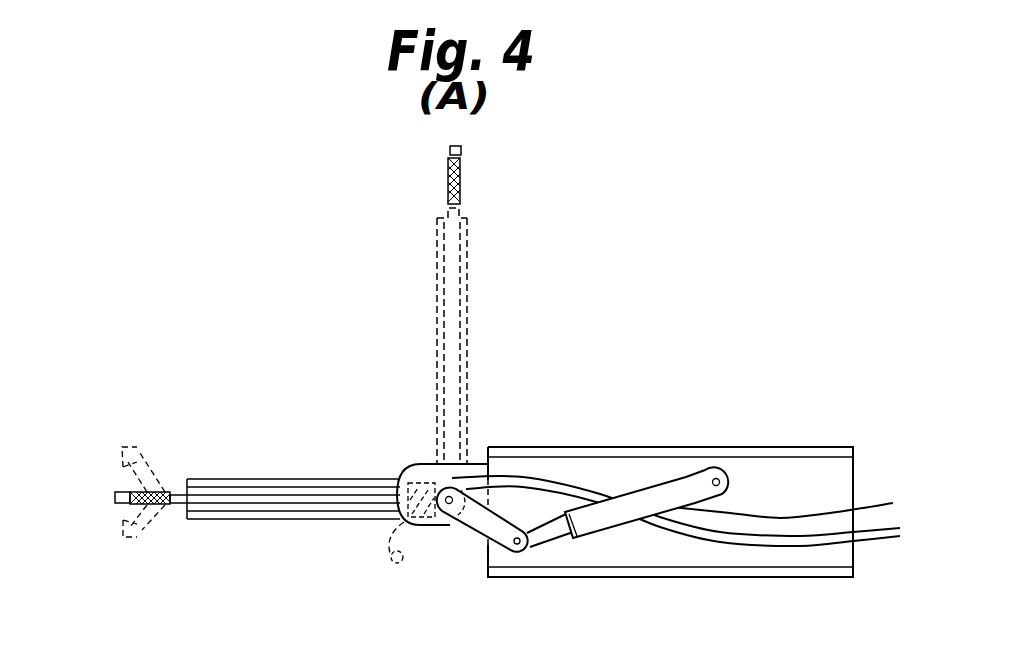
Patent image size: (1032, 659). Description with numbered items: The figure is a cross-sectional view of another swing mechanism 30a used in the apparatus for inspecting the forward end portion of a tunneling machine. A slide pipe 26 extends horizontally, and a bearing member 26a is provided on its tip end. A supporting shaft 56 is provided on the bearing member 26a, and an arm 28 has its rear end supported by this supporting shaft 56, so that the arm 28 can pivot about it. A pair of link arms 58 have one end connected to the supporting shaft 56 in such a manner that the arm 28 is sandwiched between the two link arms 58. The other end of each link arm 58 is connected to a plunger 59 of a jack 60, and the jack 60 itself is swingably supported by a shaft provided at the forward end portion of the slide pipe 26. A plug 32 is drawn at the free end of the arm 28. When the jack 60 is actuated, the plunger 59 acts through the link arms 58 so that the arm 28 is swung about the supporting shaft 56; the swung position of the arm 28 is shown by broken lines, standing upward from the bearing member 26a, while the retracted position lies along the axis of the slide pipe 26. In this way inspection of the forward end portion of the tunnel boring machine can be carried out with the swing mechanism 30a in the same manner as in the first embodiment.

The slide pipe 26 is at (627, 447).
The bearing member 26a is at (405, 470).
The arm 28 is at (288, 479).
The swing mechanism 30a is at (503, 437).
The plug 32 is at (115, 493).
The supporting shaft 56 is at (423, 478).
The link arms 58 is at (445, 533).
The plunger 59 is at (553, 533).
The jack 60 is at (668, 478).